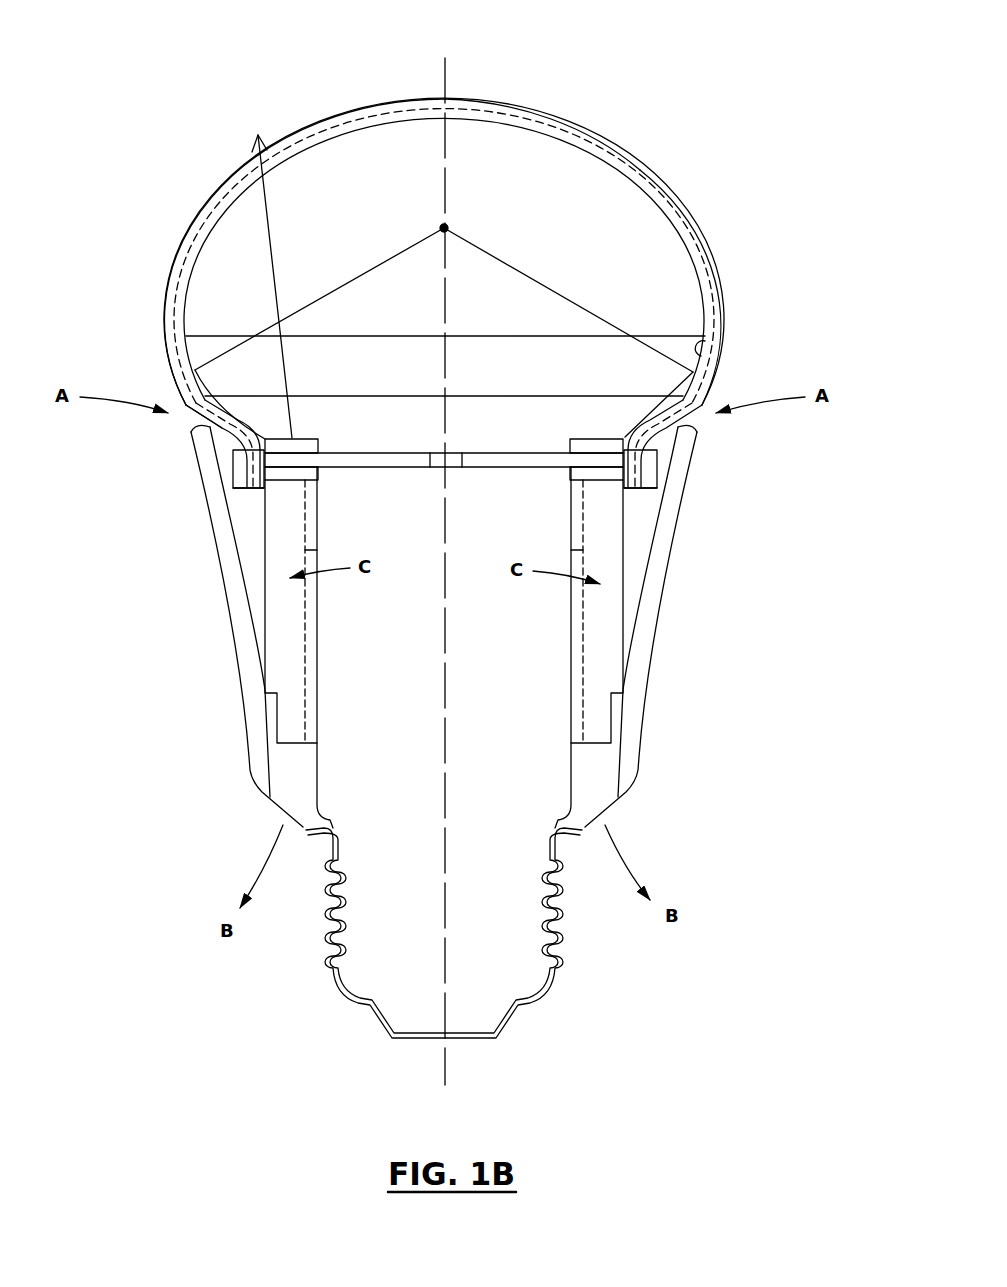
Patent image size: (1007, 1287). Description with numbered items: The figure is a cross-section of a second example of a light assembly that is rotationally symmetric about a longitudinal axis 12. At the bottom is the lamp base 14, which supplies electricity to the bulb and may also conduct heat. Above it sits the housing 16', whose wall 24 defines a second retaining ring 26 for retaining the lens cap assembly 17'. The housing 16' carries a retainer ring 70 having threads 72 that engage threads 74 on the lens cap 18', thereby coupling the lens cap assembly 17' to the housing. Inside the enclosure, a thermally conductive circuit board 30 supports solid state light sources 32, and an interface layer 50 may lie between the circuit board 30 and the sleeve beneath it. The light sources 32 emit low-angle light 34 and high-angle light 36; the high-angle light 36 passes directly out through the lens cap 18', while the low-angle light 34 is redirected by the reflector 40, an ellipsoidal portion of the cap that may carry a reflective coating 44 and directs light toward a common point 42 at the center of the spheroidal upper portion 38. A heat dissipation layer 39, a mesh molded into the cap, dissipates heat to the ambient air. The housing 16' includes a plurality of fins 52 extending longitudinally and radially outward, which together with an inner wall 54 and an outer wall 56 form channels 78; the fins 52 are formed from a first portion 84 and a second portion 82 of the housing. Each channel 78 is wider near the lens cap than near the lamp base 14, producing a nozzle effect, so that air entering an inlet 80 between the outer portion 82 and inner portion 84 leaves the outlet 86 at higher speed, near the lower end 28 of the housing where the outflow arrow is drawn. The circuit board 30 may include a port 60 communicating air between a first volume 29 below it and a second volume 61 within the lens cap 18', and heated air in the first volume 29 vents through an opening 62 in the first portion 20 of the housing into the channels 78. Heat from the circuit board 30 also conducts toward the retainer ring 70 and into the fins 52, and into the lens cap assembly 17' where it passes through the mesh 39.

The longitudinal axis 12 is at (447, 72).
The lamp base 14 is at (558, 966).
The housing 16' is at (451, 626).
The lens cap assembly 17' is at (463, 293).
The lens cap 18' is at (727, 287).
The first portion of the housing 20 is at (588, 634).
The wall 24 is at (676, 511).
The second retaining ring 26 is at (700, 420).
The lower end of housing 28 is at (630, 800).
The first volume 29 is at (396, 756).
The circuit board 30 is at (477, 460).
The light sources 32 is at (306, 445).
The low-angle light 34 is at (252, 420).
The high-angle light 36 is at (255, 155).
The upper portion 38 is at (567, 134).
The heat dissipation layer 39 is at (383, 113).
The reflector 40 is at (420, 372).
The common point 42 is at (448, 228).
The reflective coating 44 is at (700, 350).
The interface layer 50 is at (308, 471).
The fins 52 is at (256, 514).
The inner wall 54 is at (310, 640).
The outer wall 56 is at (228, 538).
The port 60 is at (453, 468).
The second volume 61 is at (515, 317).
The opening 62 is at (312, 530).
The retainer ring 70 is at (240, 484).
The threads 72 is at (230, 458).
The threads 74 is at (203, 392).
The channels 78 is at (256, 578).
The inlet 80 is at (185, 424).
The second portion 82 is at (248, 690).
The first portion 84 is at (273, 628).
The outlet 86 is at (265, 809).